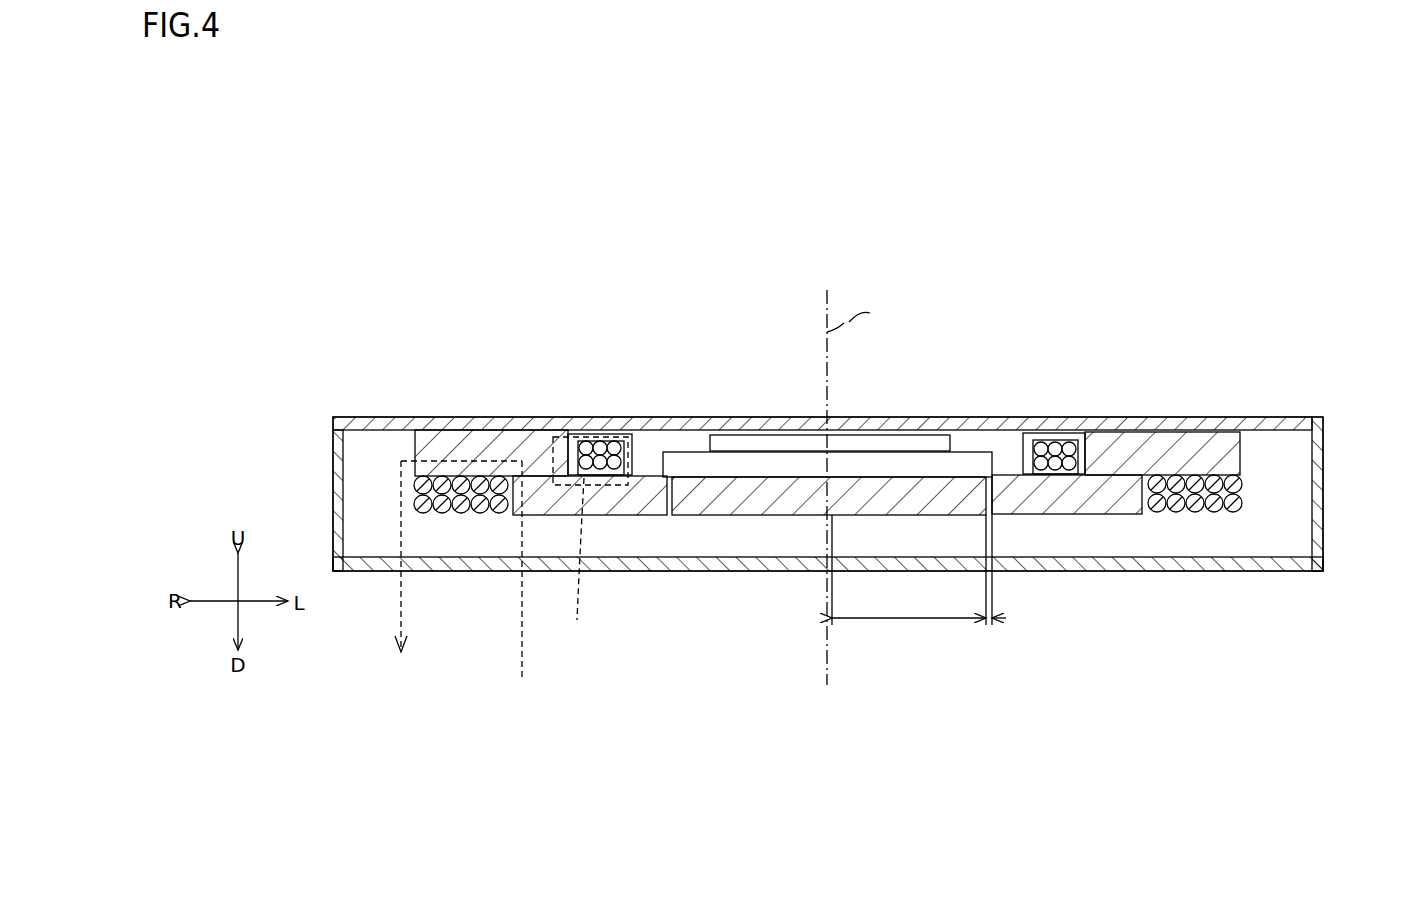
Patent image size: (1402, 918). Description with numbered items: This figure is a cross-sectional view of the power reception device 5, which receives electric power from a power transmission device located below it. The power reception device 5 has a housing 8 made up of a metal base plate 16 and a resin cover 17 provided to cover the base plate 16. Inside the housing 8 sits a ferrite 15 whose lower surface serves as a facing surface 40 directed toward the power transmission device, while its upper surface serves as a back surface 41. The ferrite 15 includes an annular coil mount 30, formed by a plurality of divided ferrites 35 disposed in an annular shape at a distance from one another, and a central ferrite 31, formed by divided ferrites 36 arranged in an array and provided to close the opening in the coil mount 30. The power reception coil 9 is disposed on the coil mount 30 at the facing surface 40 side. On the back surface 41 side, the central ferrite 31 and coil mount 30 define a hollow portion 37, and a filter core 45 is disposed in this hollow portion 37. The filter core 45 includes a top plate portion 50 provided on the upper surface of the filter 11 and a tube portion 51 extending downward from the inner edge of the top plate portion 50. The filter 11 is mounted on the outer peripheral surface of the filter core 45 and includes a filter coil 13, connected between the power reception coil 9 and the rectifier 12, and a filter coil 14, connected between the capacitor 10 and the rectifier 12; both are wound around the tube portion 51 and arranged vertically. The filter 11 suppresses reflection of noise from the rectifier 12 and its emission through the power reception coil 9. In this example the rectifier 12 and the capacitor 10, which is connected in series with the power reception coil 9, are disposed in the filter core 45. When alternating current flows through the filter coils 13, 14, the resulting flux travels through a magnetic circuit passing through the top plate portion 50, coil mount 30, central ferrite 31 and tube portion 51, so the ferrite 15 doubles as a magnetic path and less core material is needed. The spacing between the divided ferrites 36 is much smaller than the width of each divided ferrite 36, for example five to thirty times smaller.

The power reception device 5 is at (969, 343).
The housing 8 is at (1370, 405).
The base plate 16 is at (1323, 421).
The resin cover 17 is at (1318, 473).
The power reception coil 9 is at (438, 478).
The capacitor 10 is at (768, 458).
The rectifier 12 is at (725, 447).
The ferrite 15 is at (545, 338).
The coil mount 30 is at (489, 460).
The central ferrite 31 is at (548, 490).
The filter core 45 is at (645, 338).
The top plate portion 50 is at (586, 440).
The tube portion 51 is at (634, 445).
The hollow portion 37 is at (664, 440).
The facing surface 40 is at (1090, 522).
The filter 11 is at (1097, 340).
The filter coil 13 is at (1040, 447).
The filter coil 14 is at (1087, 448).
The divided ferrite 35 is at (1187, 460).
The divided ferrite 36 is at (1118, 493).
The back surface 41 is at (1212, 413).